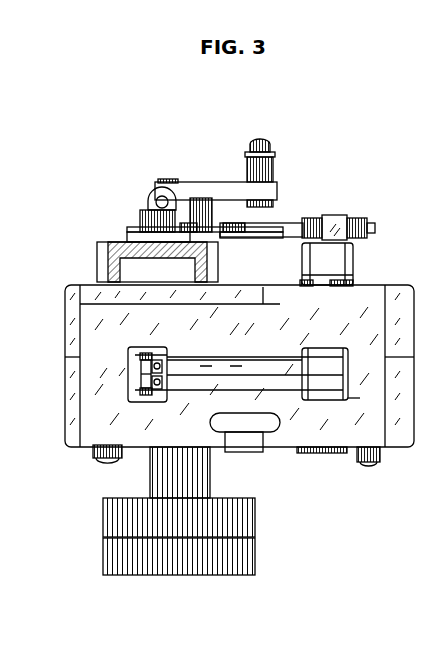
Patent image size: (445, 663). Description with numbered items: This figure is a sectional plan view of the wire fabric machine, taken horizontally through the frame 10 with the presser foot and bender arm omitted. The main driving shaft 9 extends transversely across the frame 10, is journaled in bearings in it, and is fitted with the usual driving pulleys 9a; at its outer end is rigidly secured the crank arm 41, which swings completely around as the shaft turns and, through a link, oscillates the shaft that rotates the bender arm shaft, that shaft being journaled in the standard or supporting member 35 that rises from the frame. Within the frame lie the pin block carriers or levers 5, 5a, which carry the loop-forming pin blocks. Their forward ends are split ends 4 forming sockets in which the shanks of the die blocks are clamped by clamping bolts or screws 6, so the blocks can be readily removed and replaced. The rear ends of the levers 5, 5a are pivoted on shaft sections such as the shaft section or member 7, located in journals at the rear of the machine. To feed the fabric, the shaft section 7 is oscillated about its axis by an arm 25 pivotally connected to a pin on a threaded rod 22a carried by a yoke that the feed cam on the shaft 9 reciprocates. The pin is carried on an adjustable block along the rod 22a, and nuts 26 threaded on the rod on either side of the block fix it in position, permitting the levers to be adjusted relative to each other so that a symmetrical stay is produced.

The split ends 4 is at (137, 385).
The pin block carrier or lever 5 is at (263, 374).
The pin block carrier or lever 5a is at (234, 368).
The clamping bolts or screws 6 is at (142, 396).
The shaft section or member 7 is at (327, 453).
The main driving shaft 9 is at (195, 182).
The driving pulleys 9a is at (255, 530).
The frame 10 is at (287, 442).
The threaded rod 22a is at (376, 228).
The arm 25 is at (353, 258).
The nuts 26 is at (357, 222).
The standard or supporting member 35 is at (108, 262).
The crank arm 41 is at (222, 183).